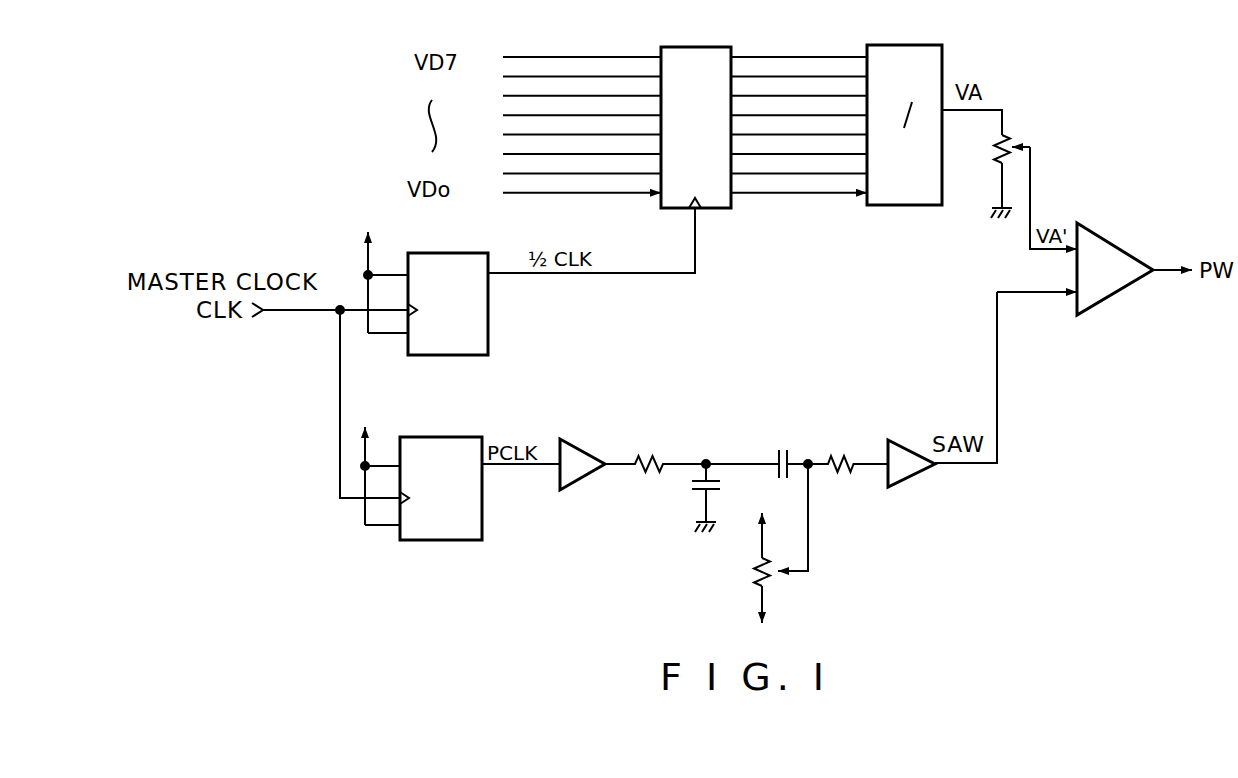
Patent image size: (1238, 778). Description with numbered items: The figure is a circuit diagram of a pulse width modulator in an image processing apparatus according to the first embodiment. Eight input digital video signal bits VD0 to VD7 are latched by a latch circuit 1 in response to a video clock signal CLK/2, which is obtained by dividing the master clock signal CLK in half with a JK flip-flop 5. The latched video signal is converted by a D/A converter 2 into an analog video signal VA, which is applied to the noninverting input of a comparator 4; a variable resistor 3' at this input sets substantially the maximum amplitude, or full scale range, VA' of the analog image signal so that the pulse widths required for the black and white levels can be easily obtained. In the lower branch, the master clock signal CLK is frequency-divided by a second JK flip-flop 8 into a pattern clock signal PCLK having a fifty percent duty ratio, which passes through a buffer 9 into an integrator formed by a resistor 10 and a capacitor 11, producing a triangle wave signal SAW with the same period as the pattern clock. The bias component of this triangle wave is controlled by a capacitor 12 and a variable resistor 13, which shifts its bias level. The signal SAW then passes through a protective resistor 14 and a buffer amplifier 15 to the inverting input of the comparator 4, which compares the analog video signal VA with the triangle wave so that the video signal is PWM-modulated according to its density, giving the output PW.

The latch circuit 1 is at (690, 47).
The D/A converter 2 is at (897, 45).
The variable resistor 3' is at (1013, 162).
The comparator 4 is at (1113, 243).
The JK flip-flop 5 is at (462, 253).
The JK flip-flop 8 is at (450, 540).
The buffer 9 is at (582, 446).
The variable resistor 10 is at (651, 452).
The capacitor 11 is at (690, 487).
The capacitor 12 is at (781, 448).
The variable resistor 13 is at (752, 578).
The protective resistor 14 is at (838, 470).
The buffer amplifier 15 is at (912, 474).